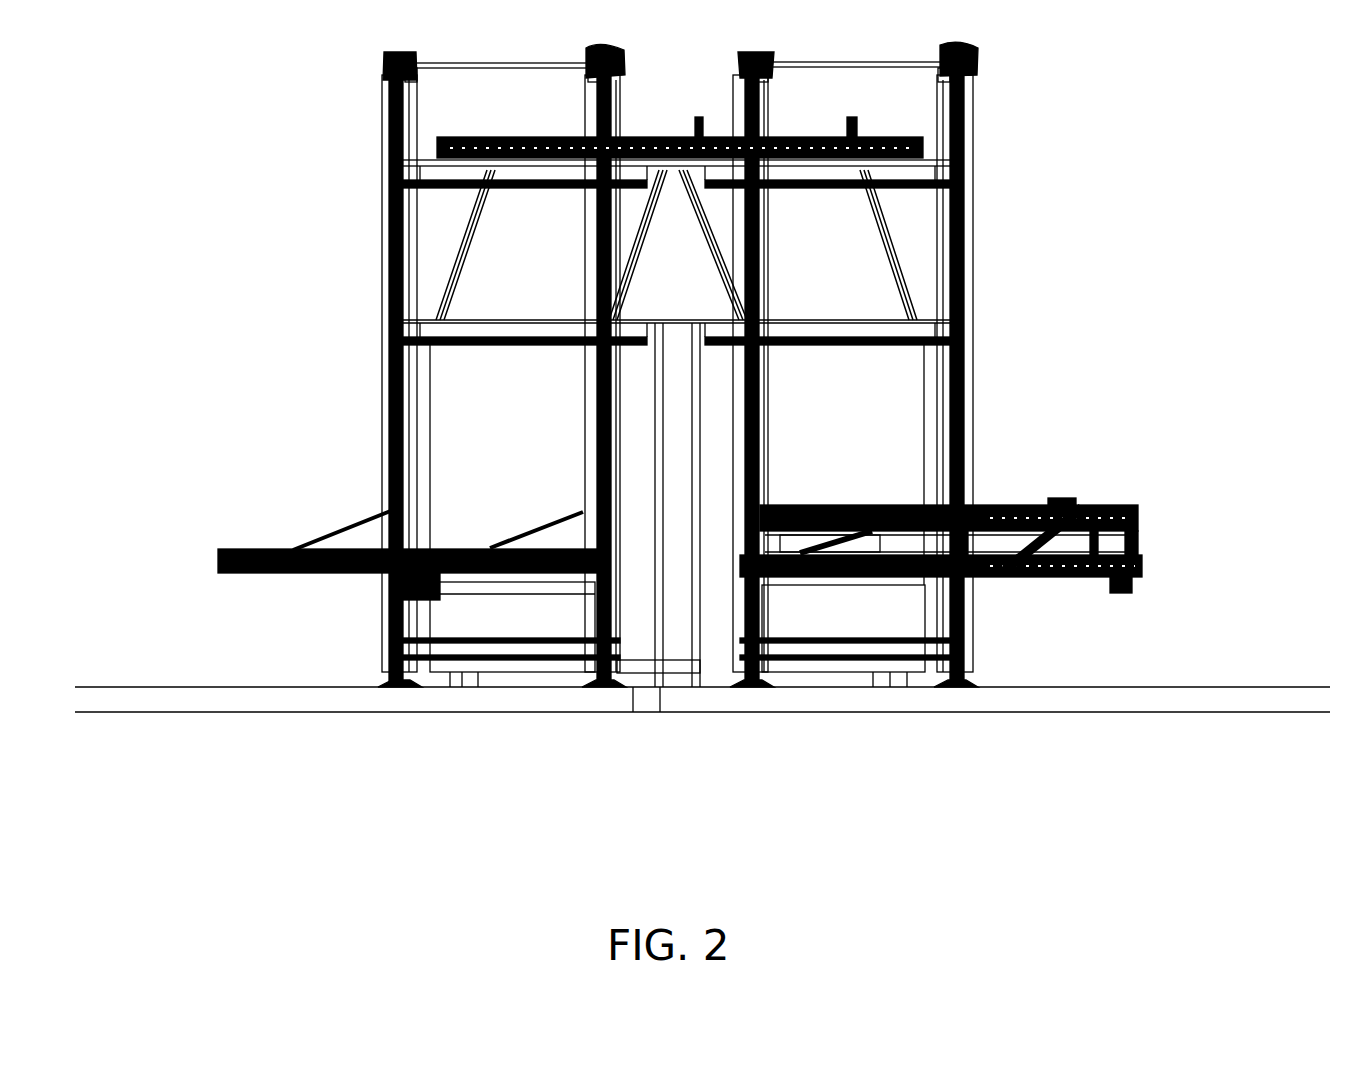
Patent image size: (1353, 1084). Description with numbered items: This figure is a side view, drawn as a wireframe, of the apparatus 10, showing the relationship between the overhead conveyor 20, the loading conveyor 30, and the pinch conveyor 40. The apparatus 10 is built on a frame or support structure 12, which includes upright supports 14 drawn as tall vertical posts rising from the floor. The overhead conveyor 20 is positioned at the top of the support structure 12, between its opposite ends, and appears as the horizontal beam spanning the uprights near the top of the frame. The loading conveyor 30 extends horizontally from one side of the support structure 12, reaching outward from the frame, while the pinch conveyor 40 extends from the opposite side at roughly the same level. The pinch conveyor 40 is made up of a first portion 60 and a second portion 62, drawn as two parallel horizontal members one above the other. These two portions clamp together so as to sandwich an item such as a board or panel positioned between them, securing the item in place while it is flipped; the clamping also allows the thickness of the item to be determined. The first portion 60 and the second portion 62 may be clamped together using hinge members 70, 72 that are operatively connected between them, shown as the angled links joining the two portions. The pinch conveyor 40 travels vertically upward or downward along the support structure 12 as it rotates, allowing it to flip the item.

The apparatus 10 is at (1066, 183).
The support structure 12 is at (968, 373).
The upright supports 14 is at (383, 92).
The overhead conveyor 20 is at (635, 147).
The loading conveyor 30 is at (220, 556).
The pinch conveyor 40 is at (1136, 521).
The first portion 60 is at (1035, 505).
The second portion 62 is at (1002, 580).
The hinge member 70 is at (1040, 583).
The hinge member 72 is at (857, 530).